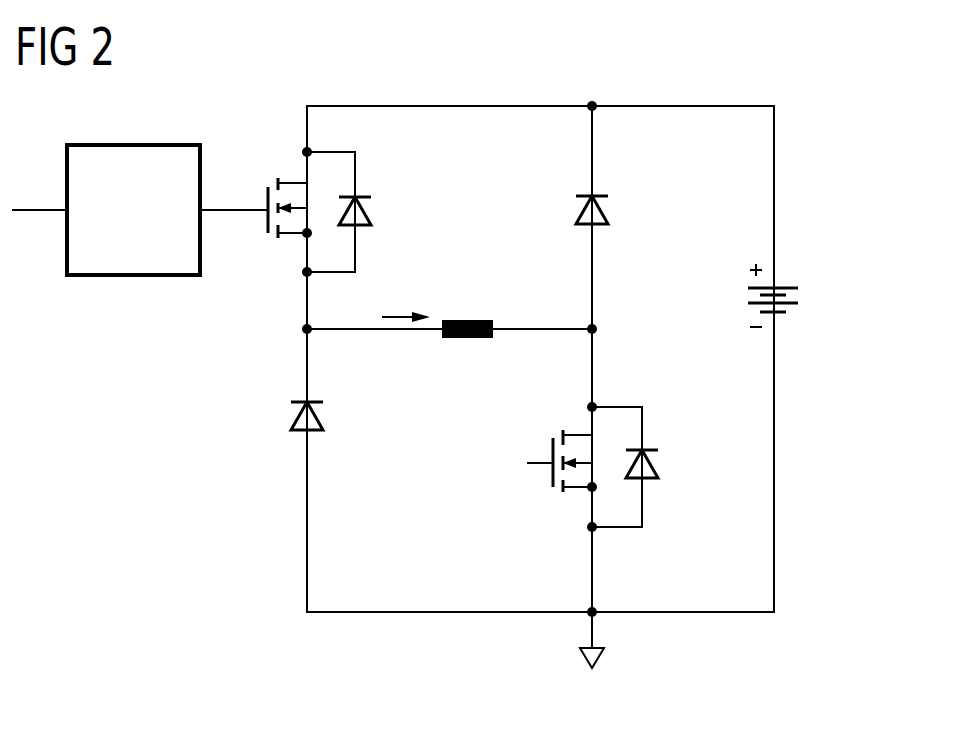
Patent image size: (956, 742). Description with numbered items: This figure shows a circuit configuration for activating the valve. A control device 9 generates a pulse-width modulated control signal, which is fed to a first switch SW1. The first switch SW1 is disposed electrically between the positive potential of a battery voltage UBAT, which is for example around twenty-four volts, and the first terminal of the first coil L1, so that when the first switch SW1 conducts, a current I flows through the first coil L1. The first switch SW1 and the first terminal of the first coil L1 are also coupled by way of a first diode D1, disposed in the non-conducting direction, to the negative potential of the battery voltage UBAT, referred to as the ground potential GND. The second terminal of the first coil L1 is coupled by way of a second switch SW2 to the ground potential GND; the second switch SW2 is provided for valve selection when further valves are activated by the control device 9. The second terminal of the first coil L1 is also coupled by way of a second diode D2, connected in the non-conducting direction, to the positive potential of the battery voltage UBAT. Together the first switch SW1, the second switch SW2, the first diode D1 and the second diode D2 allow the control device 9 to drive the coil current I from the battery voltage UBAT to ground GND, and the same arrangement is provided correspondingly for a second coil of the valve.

The control device 9 is at (132, 145).
The first switch SW1 is at (280, 241).
The second switch SW2 is at (562, 495).
The first diode D1 is at (310, 432).
The second diode D2 is at (598, 224).
The first coil L1 is at (467, 318).
The current I is at (406, 297).
The battery voltage UBAT is at (813, 335).
The ground potential GND is at (598, 660).